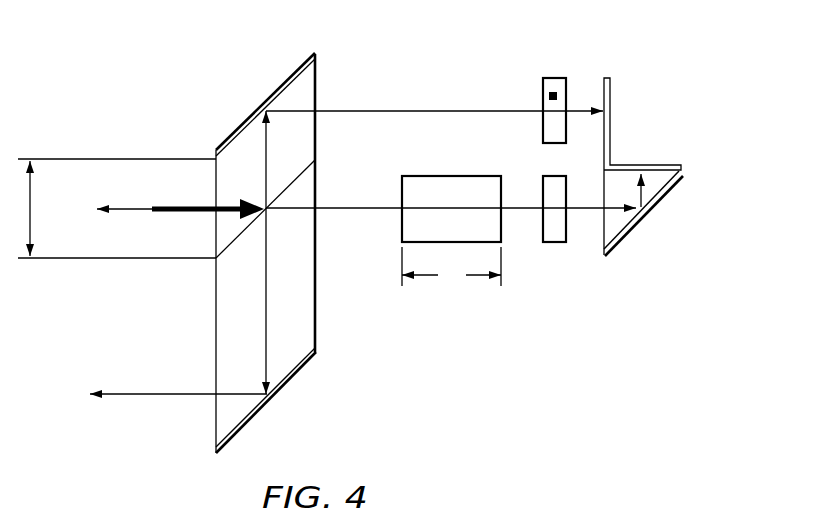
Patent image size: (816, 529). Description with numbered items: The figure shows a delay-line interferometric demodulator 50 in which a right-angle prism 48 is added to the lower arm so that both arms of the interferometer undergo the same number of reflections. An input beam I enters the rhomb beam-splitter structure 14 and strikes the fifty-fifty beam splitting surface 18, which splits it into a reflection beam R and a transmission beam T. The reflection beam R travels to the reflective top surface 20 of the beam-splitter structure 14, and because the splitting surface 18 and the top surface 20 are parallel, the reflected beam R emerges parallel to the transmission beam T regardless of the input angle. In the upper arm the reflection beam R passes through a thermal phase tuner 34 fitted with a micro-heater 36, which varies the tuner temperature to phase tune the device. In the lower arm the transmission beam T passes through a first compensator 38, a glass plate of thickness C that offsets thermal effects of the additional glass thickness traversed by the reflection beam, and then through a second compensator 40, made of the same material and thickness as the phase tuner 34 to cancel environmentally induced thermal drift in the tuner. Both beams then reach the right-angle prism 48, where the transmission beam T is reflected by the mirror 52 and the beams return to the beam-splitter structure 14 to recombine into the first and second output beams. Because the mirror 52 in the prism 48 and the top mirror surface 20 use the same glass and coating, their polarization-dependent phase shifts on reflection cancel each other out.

The rhomb beam-splitter structure 14 is at (319, 327).
The beam splitting surface 18 is at (235, 242).
The reflective top surface 20 is at (301, 82).
The thermal phase tuner 34 is at (555, 78).
The micro-heater 36 is at (548, 97).
The first compensator 38 is at (450, 176).
The second compensator 40 is at (553, 245).
The right-angle prism 48 is at (685, 177).
The demodulator 50 is at (161, 70).
The mirror 52 is at (610, 230).